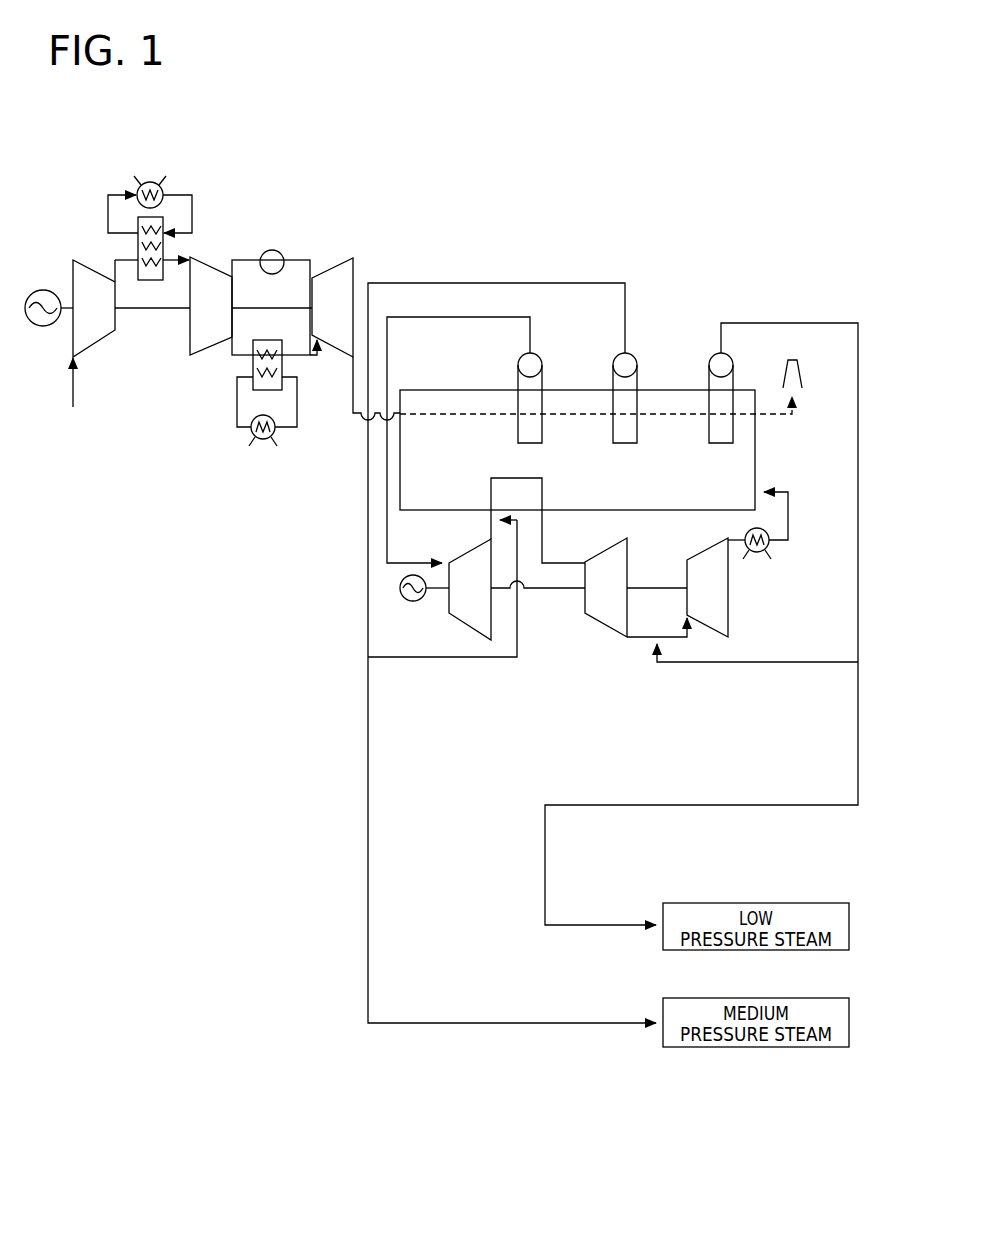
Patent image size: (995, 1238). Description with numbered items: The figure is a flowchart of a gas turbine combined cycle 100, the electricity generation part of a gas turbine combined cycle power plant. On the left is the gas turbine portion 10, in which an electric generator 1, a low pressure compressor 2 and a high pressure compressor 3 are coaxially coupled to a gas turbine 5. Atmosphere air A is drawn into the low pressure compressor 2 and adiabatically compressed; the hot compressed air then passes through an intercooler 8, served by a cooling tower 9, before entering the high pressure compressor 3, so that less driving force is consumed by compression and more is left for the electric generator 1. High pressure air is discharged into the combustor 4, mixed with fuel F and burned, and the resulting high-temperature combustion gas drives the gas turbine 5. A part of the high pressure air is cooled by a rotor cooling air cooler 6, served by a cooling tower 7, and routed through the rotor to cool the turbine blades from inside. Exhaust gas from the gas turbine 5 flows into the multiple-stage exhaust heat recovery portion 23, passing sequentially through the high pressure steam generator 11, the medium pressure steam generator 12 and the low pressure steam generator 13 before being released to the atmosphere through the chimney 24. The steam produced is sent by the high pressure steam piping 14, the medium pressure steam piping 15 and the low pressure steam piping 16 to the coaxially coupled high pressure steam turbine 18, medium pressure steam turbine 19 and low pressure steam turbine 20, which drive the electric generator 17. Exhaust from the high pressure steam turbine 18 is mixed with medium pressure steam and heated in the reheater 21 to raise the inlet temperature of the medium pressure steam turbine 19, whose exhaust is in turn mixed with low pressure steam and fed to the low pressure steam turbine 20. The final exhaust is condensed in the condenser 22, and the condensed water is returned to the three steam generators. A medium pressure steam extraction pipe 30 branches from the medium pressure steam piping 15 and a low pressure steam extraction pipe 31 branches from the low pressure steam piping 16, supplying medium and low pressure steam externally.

The gas turbine combined cycle 100 is at (557, 182).
The gas turbine portion 10 is at (218, 468).
The electric generator 1 is at (50, 290).
The low pressure compressor 2 is at (68, 253).
The high pressure compressor 3 is at (205, 360).
The combustor 4 is at (265, 250).
The gas turbine 5 is at (325, 278).
The rotor cooling air cooler 6 is at (288, 362).
The cooling tower 7 is at (260, 448).
The intercooler 8 is at (168, 248).
The cooling tower 9 is at (157, 178).
The atmosphere air A is at (73, 402).
The fuel F is at (281, 242).
The high pressure steam generator 11 is at (533, 352).
The medium pressure steam generator 12 is at (622, 352).
The low pressure steam generator 13 is at (725, 352).
The high pressure steam piping 14 is at (390, 320).
The medium pressure steam piping 15 is at (455, 283).
The low pressure steam piping 16 is at (730, 664).
The electric generator 17 is at (408, 604).
The high pressure steam turbine 18 is at (466, 632).
The medium pressure steam turbine 19 is at (590, 622).
The low pressure steam turbine 20 is at (733, 595).
The reheater 21 is at (490, 482).
The condenser 22 is at (762, 554).
The multiple-stage exhaust heat recovery portion 23 is at (675, 355).
The chimney 24 is at (803, 370).
The medium pressure steam extraction pipe 30 is at (366, 855).
The low pressure steam extraction pipe 31 is at (543, 858).